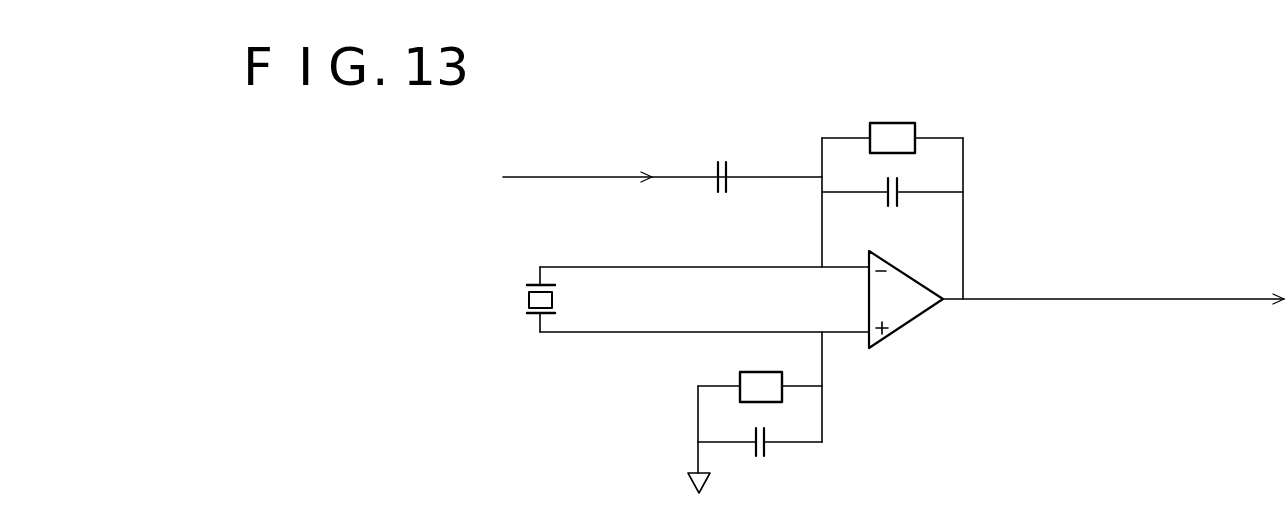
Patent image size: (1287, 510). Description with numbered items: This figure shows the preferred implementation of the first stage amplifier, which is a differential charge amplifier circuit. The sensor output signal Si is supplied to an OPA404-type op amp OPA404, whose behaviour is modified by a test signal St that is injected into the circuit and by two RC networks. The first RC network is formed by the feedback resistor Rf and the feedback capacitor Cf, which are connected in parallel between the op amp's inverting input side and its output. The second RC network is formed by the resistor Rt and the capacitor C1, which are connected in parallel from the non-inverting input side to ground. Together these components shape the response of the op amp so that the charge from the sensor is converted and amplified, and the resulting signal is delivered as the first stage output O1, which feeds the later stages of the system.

The test signal St is at (662, 184).
The sensor output signal Si is at (698, 299).
The feedback resistor Rf is at (892, 123).
The feedback capacitor Cf is at (892, 205).
The op amp OPA404 is at (944, 300).
The first stage output O1 is at (1113, 285).
The input resistor Rt is at (760, 373).
The input capacitor C1 is at (755, 439).